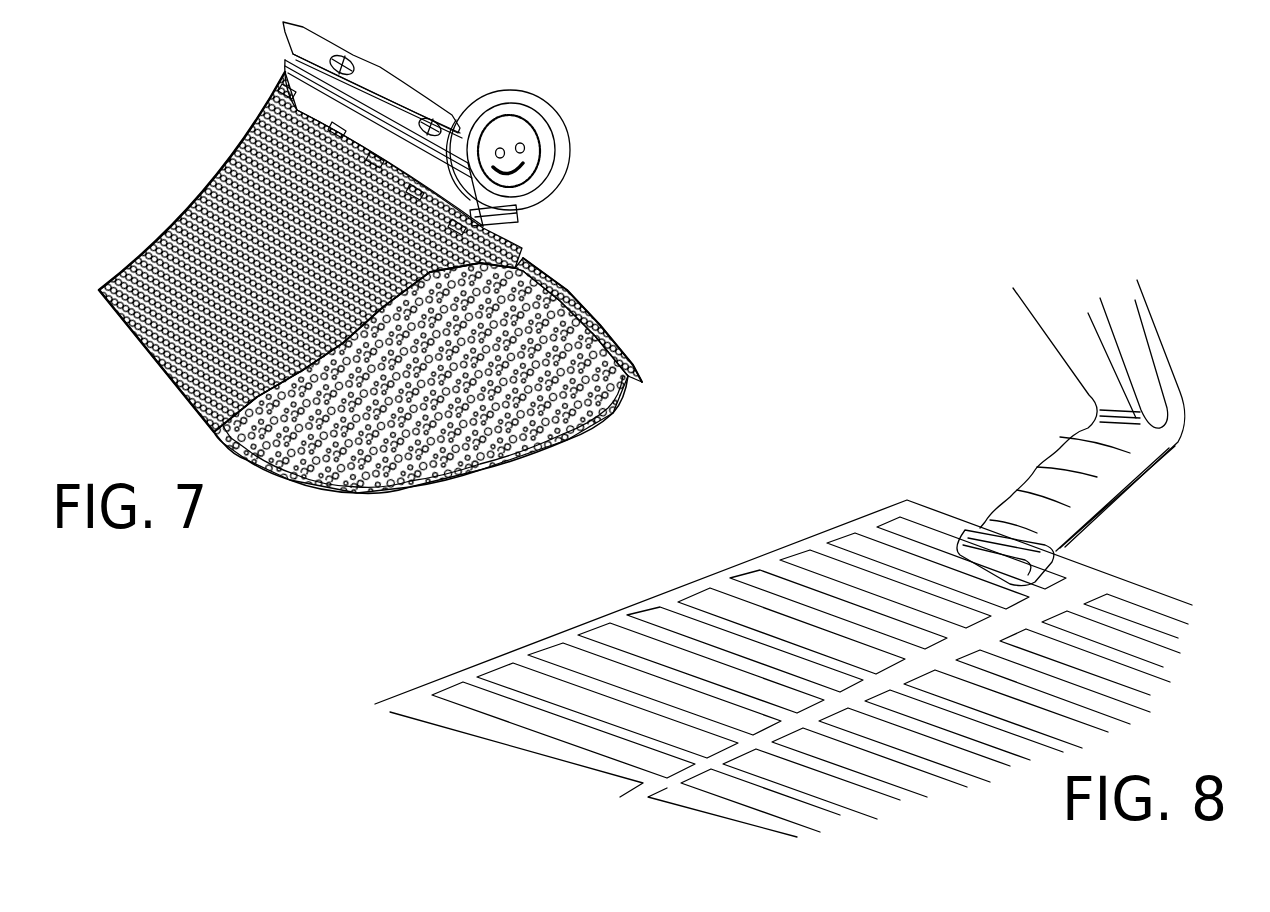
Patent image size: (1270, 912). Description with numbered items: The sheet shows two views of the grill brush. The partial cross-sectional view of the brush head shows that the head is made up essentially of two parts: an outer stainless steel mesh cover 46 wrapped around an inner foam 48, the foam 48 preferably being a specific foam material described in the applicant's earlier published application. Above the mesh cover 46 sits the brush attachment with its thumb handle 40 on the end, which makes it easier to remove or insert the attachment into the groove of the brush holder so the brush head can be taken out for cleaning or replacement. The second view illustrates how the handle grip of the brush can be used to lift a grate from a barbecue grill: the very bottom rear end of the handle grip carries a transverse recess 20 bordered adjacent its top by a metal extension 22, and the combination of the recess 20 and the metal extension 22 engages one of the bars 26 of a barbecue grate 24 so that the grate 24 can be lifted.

In FIG. 8, the transverse recess 20 is at (1050, 548).
In FIG. 8, the metal extension 22 is at (968, 532).
In FIG. 8, the barbecue grate 24 is at (806, 668).
In FIG. 8, the bars 26 is at (1120, 585).
In FIG. 7, the thumb handle 40 is at (548, 122).
In FIG. 7, the outer stainless steel mesh cover 46 is at (583, 312).
In FIG. 7, the inner foam 48 is at (490, 400).